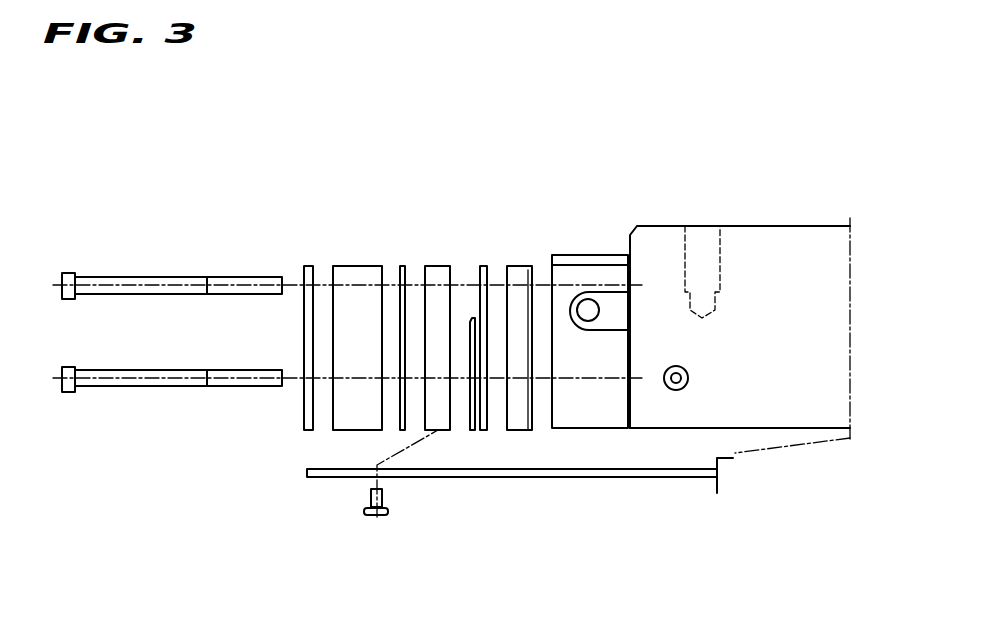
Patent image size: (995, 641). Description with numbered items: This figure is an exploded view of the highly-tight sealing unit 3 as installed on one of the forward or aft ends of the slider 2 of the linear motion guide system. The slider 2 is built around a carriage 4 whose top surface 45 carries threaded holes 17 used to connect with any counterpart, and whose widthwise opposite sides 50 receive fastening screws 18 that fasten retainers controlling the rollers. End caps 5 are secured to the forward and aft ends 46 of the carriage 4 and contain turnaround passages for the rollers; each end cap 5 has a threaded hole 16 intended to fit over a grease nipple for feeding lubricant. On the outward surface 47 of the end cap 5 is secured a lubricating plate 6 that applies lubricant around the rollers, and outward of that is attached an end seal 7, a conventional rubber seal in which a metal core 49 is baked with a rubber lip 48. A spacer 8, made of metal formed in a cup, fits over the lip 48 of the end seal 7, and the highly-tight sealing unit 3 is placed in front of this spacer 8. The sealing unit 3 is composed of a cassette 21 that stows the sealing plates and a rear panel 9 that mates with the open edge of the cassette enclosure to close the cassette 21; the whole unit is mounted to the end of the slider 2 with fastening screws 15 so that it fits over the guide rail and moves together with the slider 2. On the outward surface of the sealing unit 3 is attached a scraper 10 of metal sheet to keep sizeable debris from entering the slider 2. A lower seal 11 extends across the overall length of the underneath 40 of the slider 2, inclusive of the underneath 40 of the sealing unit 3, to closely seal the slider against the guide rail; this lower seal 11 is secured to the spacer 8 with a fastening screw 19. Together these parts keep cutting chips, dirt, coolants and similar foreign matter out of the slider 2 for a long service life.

The slider 2 is at (651, 220).
The highly-tight sealing unit 3 is at (357, 275).
The carriage 4 is at (767, 265).
The end cap 5 is at (587, 413).
The lubricating plate 6 is at (520, 267).
The end seal 7 is at (483, 267).
The spacer 8 is at (442, 262).
The rear panel 9 is at (403, 267).
The scraper 10 is at (307, 267).
The lower seal 11 is at (497, 478).
The fastening screw 15 is at (138, 282).
The threaded hole 16 is at (590, 310).
The threaded hole 17 is at (690, 247).
The fastening screw 18 is at (688, 372).
The fastening screw 19 is at (385, 502).
The cassette 21 is at (342, 348).
The underneath 40 is at (347, 428).
The top surface 45 is at (798, 226).
The forward and aft ends 46 is at (628, 395).
The outward surface 47 is at (552, 390).
The lip 48 is at (467, 430).
The metal core 49 is at (476, 318).
The widthwise opposite sides 50 is at (802, 395).